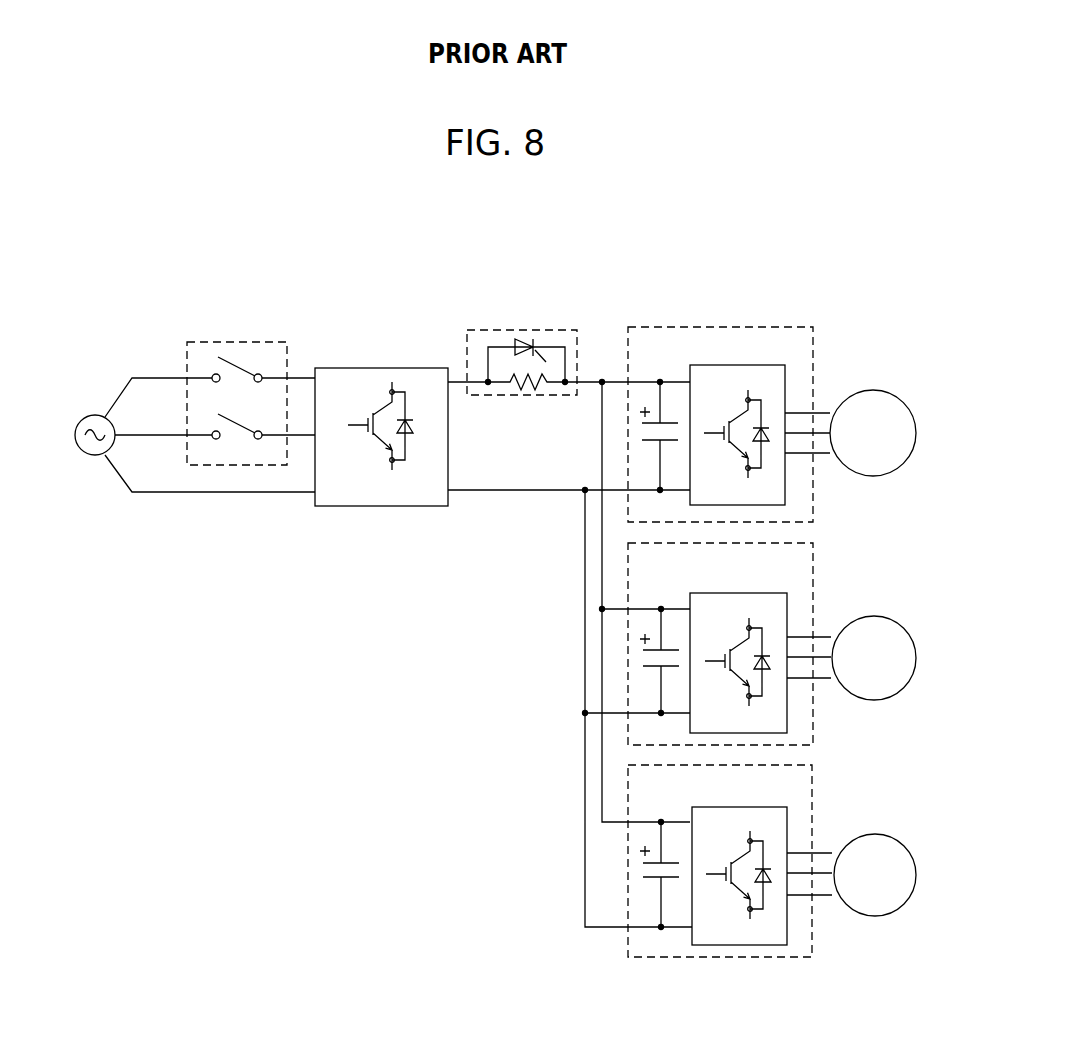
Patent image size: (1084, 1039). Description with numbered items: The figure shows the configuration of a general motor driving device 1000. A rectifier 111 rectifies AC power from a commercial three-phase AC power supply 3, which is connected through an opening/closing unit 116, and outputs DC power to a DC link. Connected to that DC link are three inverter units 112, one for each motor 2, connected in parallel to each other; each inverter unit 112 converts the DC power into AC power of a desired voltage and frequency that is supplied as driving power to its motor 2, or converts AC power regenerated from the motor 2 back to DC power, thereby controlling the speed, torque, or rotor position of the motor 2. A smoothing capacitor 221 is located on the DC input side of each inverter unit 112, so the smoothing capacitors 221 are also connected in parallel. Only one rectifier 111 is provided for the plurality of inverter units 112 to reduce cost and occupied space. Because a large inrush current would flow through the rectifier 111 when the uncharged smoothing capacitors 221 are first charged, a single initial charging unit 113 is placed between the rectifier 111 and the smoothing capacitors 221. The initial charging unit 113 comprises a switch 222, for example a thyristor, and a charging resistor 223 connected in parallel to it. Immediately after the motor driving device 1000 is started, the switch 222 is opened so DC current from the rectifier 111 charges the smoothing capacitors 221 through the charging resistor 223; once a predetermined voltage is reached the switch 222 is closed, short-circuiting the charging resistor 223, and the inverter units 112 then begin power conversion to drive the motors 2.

The motor driving device 1000 is at (577, 265).
The commercial three-phase AC power supply 3 is at (82, 417).
The opening/closing unit 116 is at (242, 342).
The rectifier 111 is at (367, 368).
The initial charging unit 113 is at (582, 340).
The switch 222 is at (536, 351).
The charging resistor 223 is at (528, 384).
The smoothing capacitor 221 is at (624, 437).
The inverter unit 112 is at (820, 333).
The motor 2 is at (867, 393).